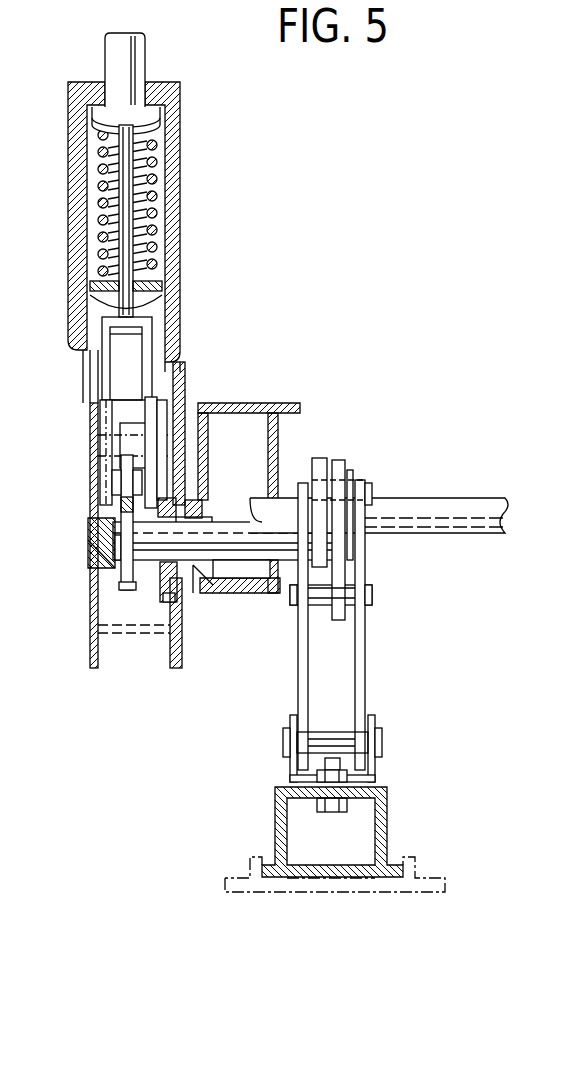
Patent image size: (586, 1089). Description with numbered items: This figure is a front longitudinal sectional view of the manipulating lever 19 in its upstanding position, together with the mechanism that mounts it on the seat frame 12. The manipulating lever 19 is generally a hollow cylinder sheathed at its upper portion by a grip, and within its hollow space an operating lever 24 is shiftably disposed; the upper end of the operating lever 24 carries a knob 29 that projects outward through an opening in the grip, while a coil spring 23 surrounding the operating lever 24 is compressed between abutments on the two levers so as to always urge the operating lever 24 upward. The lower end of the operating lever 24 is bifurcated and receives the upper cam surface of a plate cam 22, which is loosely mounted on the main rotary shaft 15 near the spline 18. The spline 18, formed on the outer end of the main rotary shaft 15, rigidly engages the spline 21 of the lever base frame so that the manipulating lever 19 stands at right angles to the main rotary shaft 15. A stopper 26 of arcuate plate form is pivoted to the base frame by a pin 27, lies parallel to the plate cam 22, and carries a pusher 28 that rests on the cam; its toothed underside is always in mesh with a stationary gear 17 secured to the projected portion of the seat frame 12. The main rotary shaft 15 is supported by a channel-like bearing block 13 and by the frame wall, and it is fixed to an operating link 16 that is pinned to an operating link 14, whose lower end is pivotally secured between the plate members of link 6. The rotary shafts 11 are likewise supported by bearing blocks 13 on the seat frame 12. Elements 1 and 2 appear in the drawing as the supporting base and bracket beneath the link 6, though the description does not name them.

The base 1 is at (385, 820).
The bracket 2 is at (372, 773).
The link 6 is at (362, 652).
The rotary shaft 11 is at (470, 508).
The seat frame 12 is at (192, 415).
The bearing block 13 is at (278, 436).
The operating link 14 is at (338, 558).
The main rotary shaft 15 is at (222, 547).
The operating link 16 is at (315, 567).
The stationary gear 17 is at (170, 602).
The spline 18 is at (90, 556).
The manipulating lever 19 is at (176, 166).
The spline 21 is at (98, 590).
The plate cam 22 is at (128, 590).
The coil spring 23 is at (150, 213).
The operating lever 24 is at (138, 127).
The stopper 26 is at (75, 387).
The pin 27 is at (120, 434).
The pusher 28 is at (130, 420).
The knob 29 is at (138, 52).